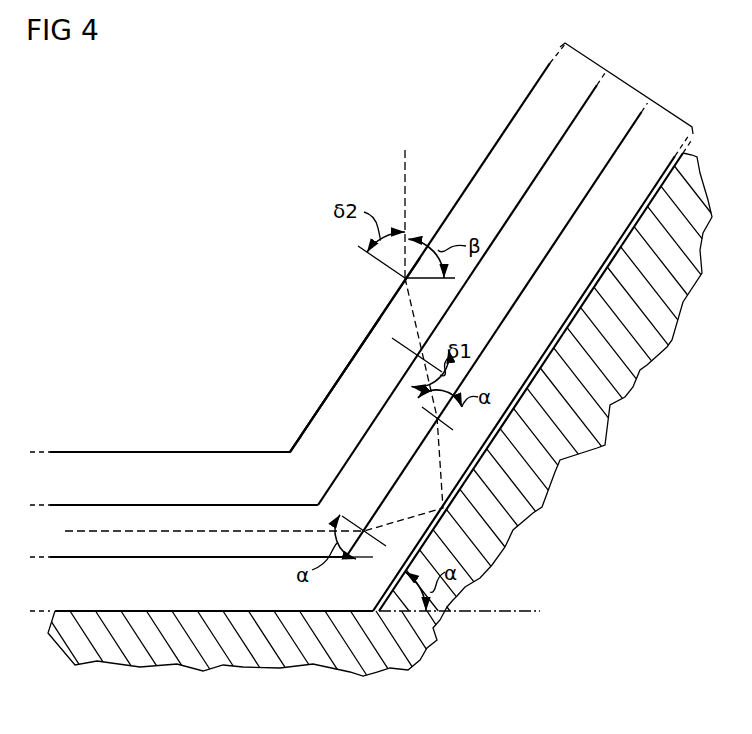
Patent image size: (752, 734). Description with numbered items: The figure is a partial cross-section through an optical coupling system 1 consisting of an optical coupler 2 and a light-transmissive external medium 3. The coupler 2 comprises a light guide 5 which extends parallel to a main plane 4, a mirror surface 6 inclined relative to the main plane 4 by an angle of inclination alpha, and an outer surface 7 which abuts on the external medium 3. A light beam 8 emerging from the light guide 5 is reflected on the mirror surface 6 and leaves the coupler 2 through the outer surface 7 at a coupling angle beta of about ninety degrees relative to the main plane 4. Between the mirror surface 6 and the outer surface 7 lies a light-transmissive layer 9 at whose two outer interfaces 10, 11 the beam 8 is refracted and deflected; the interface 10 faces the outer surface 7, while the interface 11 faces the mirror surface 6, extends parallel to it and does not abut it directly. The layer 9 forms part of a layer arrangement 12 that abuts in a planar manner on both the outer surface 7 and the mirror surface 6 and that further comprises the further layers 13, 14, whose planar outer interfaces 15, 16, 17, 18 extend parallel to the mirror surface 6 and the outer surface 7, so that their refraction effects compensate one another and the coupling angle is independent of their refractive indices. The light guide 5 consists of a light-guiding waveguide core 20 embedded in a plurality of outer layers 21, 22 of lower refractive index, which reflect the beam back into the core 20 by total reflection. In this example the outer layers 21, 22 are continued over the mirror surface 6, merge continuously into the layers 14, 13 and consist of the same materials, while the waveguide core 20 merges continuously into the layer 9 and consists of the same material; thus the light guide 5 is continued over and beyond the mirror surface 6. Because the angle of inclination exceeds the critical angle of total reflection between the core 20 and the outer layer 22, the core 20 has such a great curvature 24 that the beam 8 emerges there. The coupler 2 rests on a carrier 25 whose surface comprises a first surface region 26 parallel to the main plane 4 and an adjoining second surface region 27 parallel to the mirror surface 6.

The optical coupling system 1 is at (178, 126).
The optical coupler 2 is at (167, 396).
The light-transmissive external medium 3 is at (242, 252).
The main plane 4 is at (508, 616).
The light guide 5 is at (142, 448).
The mirror surface 6 is at (567, 322).
The outer surface 7 is at (340, 377).
The light beam 8 is at (417, 514).
The light-transmissive layer 9 is at (410, 388).
The outer interface 10 is at (369, 426).
The outer interface 11 is at (575, 218).
The layer arrangement 12 is at (625, 83).
The further layer 13 is at (607, 262).
The further layer 14 is at (375, 334).
The planar outer interface 15 is at (585, 293).
The planar outer interface 16 is at (492, 342).
The planar outer interface 17 is at (568, 124).
The planar outer interface 18 is at (342, 369).
The waveguide core 20 is at (168, 512).
The outer layer 21 is at (83, 457).
The outer layer 22 is at (103, 600).
The curvature 24 is at (284, 442).
The carrier 25 is at (641, 344).
The first surface region 26 is at (188, 609).
The second surface region 27 is at (488, 437).